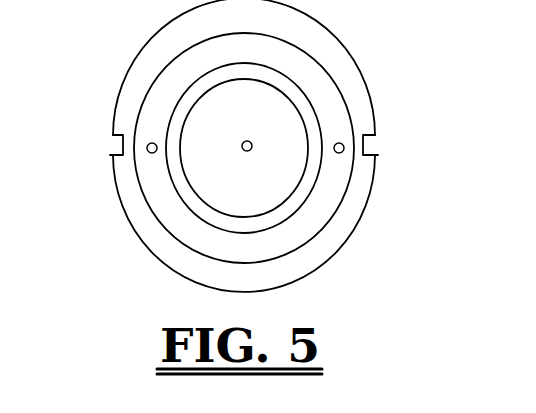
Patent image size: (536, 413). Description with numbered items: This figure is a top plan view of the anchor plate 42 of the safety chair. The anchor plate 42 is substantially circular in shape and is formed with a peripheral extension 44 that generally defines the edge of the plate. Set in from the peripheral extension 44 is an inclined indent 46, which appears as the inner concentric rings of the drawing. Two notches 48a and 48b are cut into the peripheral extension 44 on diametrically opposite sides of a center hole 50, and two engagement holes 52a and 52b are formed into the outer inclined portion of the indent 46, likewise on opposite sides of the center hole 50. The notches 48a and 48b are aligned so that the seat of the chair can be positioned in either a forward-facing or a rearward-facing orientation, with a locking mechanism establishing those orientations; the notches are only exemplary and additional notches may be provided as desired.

The anchor plate 42 is at (135, 62).
The peripheral extension 44 is at (313, 43).
The inclined indent 46 is at (310, 82).
The notch 48a is at (364, 152).
The notch 48b is at (122, 143).
The center hole 50 is at (243, 151).
The engagement hole 52a is at (340, 153).
The engagement hole 52b is at (150, 154).